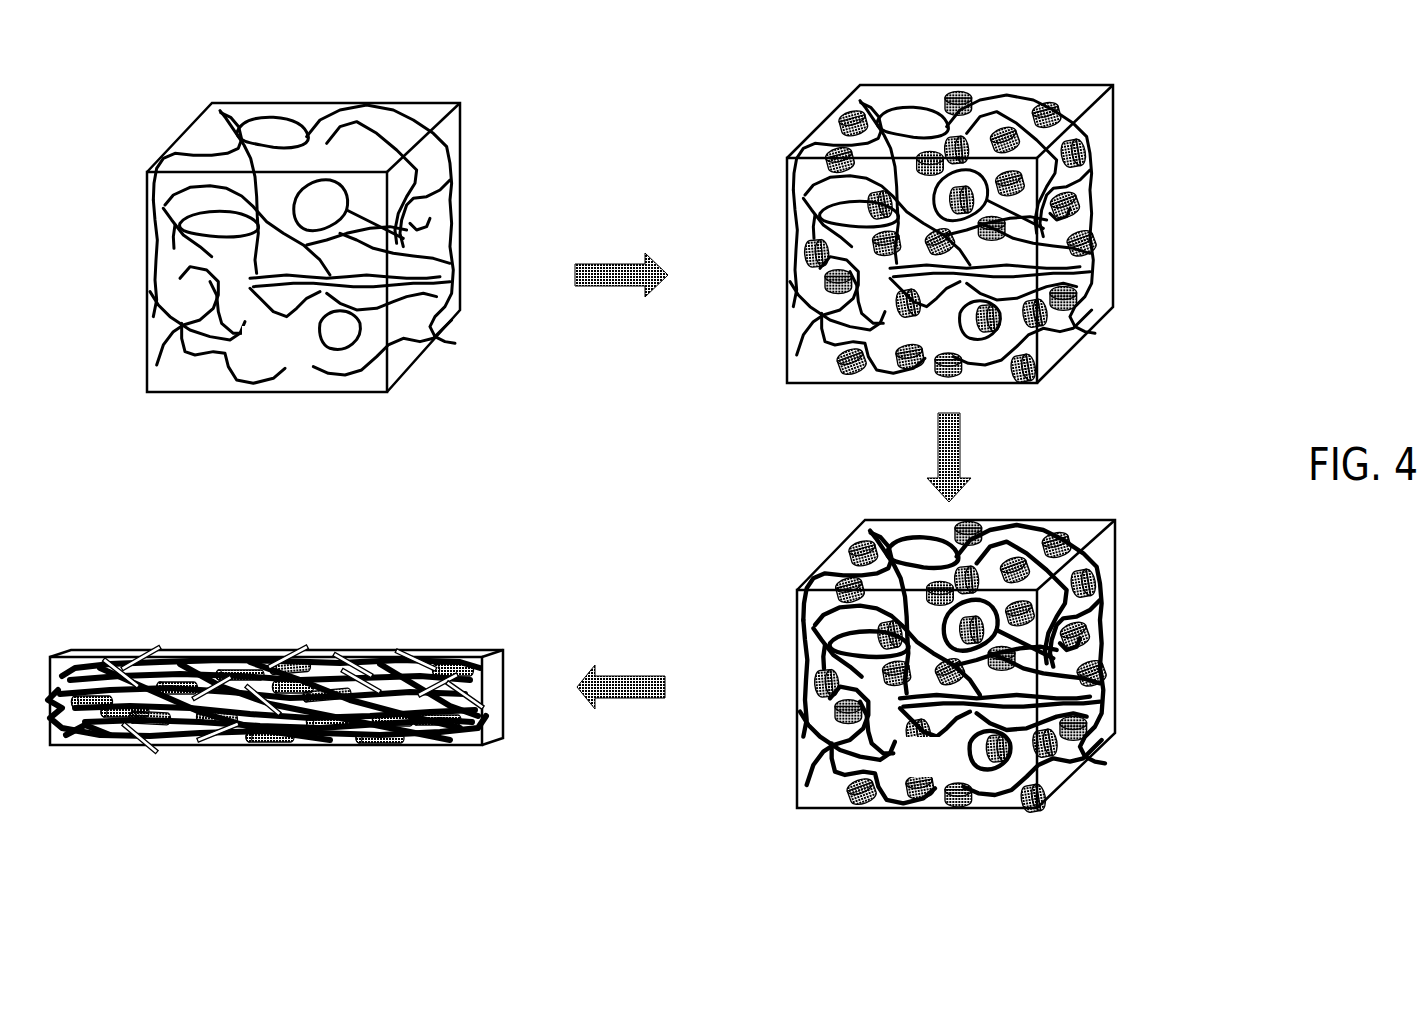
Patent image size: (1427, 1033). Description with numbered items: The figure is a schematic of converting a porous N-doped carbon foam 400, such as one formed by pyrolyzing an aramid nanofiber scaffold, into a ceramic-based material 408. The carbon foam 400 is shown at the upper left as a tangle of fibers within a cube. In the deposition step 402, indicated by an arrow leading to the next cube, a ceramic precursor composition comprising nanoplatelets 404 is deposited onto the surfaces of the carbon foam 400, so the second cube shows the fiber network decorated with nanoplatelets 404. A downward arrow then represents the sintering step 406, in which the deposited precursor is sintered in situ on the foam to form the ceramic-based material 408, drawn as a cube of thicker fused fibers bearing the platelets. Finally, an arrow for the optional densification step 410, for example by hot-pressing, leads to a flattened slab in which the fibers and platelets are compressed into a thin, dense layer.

The N-doped carbon foam 400 is at (255, 357).
The deposition step 402 is at (612, 231).
The nanoplatelets 404 is at (1098, 230).
The sintering step 406 is at (1007, 457).
The ceramic-based material 408 is at (957, 770).
The densification step 410 is at (627, 642).